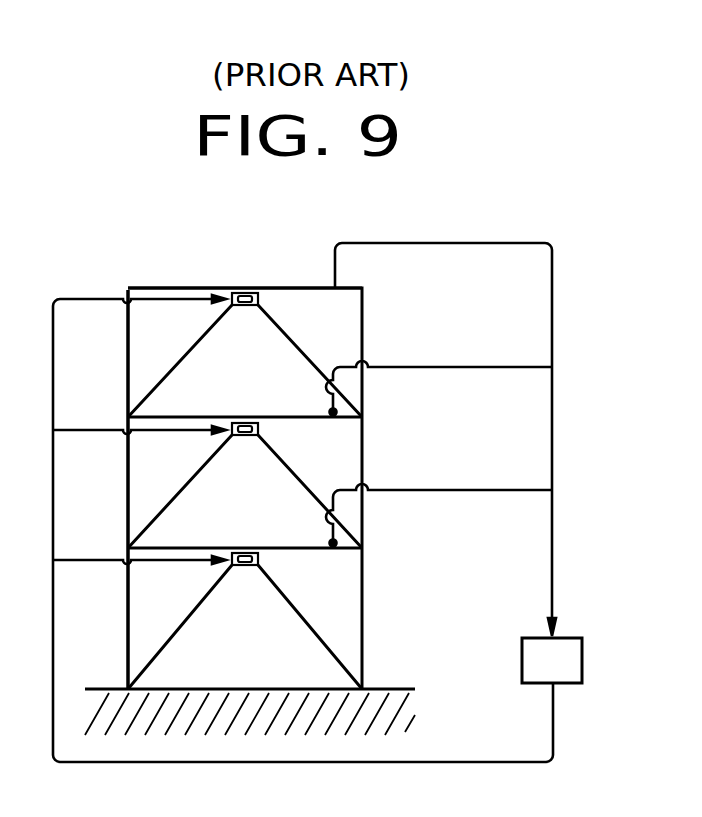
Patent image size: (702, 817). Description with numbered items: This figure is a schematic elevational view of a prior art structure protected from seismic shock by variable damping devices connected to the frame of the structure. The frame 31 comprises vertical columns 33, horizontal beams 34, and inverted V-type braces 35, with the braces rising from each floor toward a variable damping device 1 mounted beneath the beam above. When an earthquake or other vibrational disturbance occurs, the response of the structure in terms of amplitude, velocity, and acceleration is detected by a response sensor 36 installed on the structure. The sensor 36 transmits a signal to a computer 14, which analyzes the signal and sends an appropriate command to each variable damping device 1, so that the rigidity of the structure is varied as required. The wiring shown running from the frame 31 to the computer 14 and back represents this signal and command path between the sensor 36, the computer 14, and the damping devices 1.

The variable damping device 1 is at (235, 291).
The computer 14 is at (582, 660).
The frame 31 is at (152, 288).
The columns 33 is at (127, 362).
The beams 34 is at (282, 288).
The inverted V-type braces 35 is at (203, 345).
The response sensor 36 is at (335, 288).